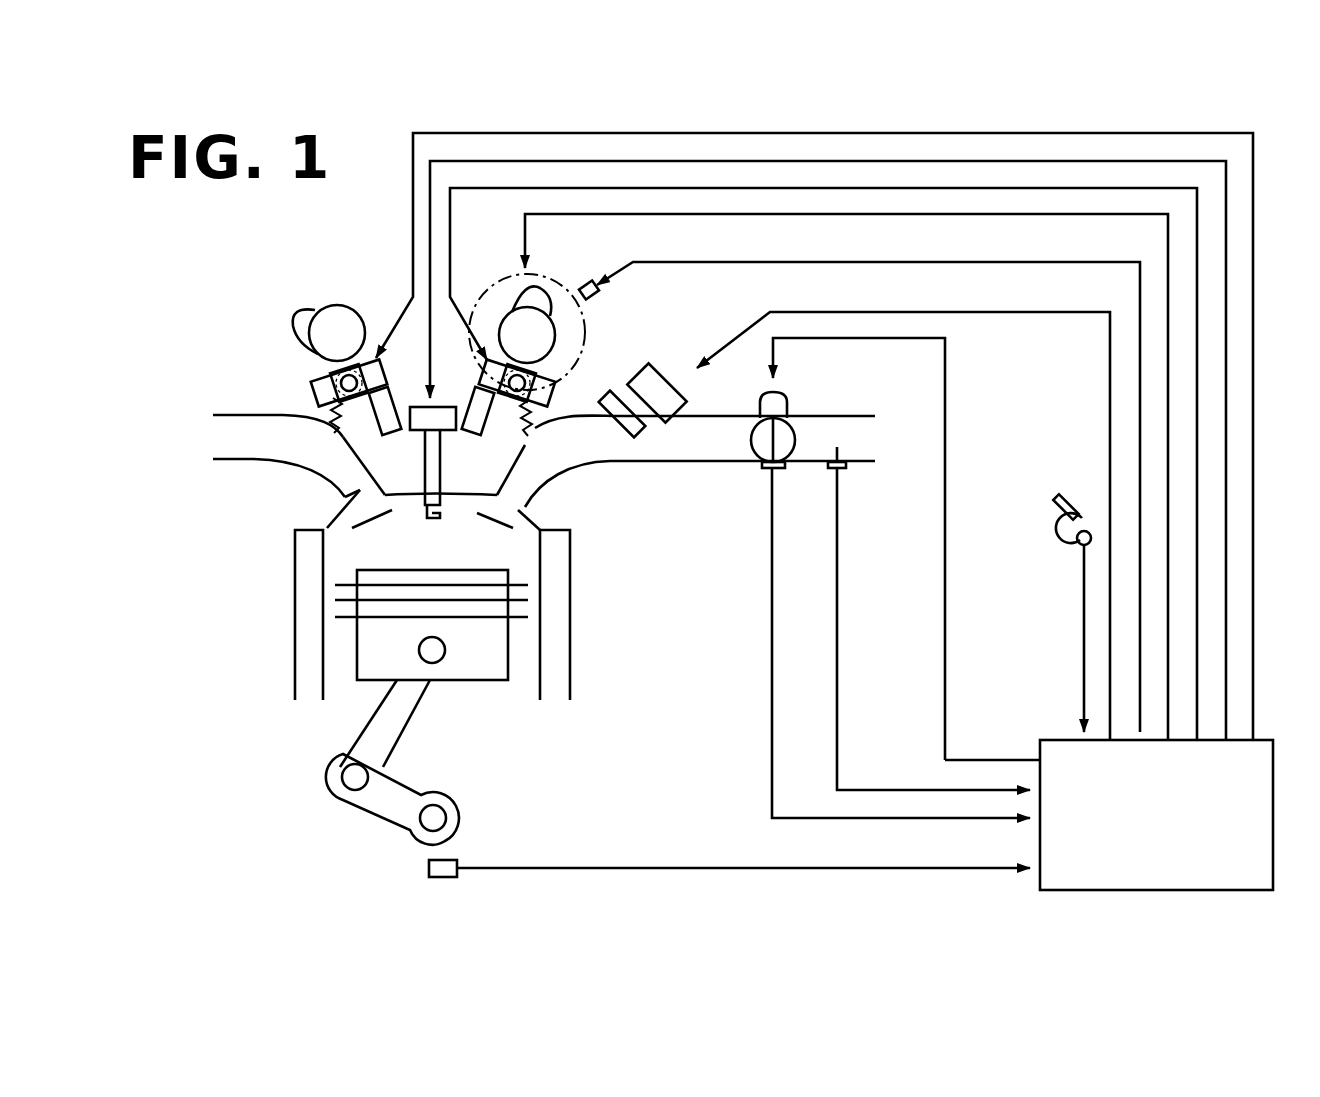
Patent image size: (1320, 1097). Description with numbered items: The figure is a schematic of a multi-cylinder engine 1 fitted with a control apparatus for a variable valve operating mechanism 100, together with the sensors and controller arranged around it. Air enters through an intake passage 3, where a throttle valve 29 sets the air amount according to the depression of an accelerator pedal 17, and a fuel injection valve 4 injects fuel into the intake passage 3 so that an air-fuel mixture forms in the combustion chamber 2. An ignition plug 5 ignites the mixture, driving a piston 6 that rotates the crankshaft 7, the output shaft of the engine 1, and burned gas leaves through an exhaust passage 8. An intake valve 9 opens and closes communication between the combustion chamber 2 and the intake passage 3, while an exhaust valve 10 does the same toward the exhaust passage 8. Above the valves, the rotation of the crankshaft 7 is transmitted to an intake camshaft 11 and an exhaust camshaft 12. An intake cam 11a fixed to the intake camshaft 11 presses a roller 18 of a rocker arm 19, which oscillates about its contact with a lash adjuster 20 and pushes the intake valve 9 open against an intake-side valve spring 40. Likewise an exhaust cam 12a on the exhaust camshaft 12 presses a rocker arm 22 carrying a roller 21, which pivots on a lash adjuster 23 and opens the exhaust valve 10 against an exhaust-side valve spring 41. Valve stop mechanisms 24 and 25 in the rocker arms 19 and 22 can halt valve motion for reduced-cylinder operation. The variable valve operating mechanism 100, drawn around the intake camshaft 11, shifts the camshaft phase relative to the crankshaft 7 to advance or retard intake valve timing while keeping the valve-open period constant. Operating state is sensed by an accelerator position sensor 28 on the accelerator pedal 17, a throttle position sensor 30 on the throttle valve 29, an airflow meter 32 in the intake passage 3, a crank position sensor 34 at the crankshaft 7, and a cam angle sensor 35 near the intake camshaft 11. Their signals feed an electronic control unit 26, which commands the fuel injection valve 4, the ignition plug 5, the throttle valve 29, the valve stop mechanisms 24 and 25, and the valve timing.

The engine 1 is at (285, 618).
The combustion chamber 2 is at (345, 559).
The intake passage 3 is at (650, 458).
The fuel injection valve 4 is at (686, 385).
The ignition plug 5 is at (424, 463).
The piston 6 is at (483, 682).
The crankshaft 7 is at (456, 800).
The exhaust passage 8 is at (250, 460).
The intake valve 9 is at (492, 490).
The exhaust valve 10 is at (338, 505).
The intake camshaft 11 is at (512, 325).
The intake cam 11a is at (538, 302).
The exhaust camshaft 12 is at (343, 323).
The exhaust cam 12a is at (300, 313).
The accelerator pedal 17 is at (1057, 499).
The roller 18 is at (548, 383).
The rocker arm 19 is at (557, 402).
The lash adjuster 20 is at (422, 406).
The roller 21 is at (330, 371).
The rocker arm 22 is at (314, 385).
The lash adjuster 23 is at (396, 392).
The valve stop mechanism 24 is at (478, 424).
The valve stop mechanism 25 is at (338, 420).
The electronic control unit 26 is at (1047, 738).
The accelerator position sensor 28 is at (1086, 531).
The throttle valve 29 is at (795, 430).
The throttle position sensor 30 is at (778, 470).
The airflow meter 32 is at (846, 468).
The crank position sensor 34 is at (437, 880).
The cam angle sensor 35 is at (592, 282).
The intake-side valve spring 40 is at (535, 425).
The exhaust-side valve spring 41 is at (322, 430).
The variable valve operating mechanism 100 is at (585, 325).